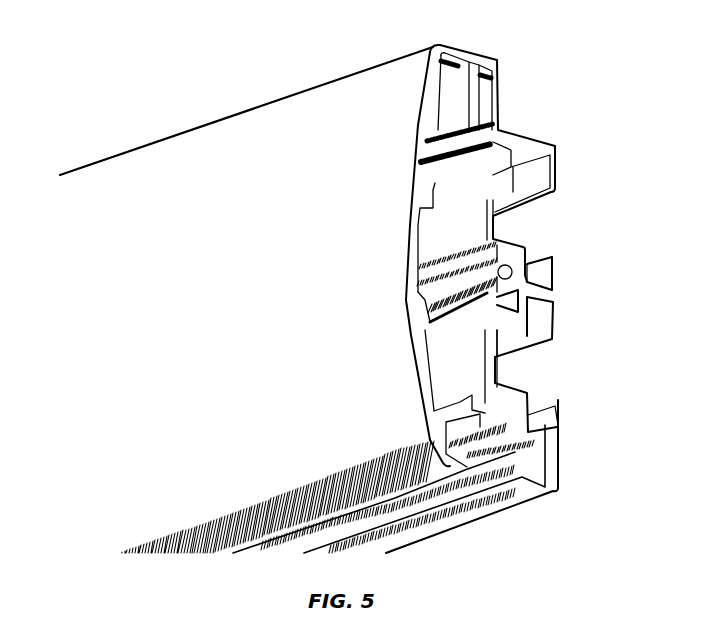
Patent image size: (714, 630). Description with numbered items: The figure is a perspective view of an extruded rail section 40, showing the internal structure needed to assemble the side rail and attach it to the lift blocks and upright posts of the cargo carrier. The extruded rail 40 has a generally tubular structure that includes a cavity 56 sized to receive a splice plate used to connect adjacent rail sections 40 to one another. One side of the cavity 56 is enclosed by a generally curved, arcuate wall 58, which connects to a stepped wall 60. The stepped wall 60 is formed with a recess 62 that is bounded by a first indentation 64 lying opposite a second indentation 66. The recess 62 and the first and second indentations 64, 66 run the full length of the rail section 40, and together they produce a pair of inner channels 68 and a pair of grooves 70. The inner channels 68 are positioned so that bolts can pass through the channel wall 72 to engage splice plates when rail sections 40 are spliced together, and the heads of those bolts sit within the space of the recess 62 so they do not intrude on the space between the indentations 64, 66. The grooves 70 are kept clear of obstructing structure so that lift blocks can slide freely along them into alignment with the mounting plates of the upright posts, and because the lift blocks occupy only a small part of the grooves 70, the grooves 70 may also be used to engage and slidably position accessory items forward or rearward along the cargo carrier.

The extruded rail section 40 is at (148, 202).
The cavity 56 is at (497, 360).
The arcuate wall 58 is at (427, 90).
The stepped wall 60 is at (490, 200).
The recess 62 is at (505, 227).
The first indentation 64 is at (538, 275).
The second indentation 66 is at (531, 159).
The inner channel 68 is at (499, 189).
The groove 70 is at (519, 213).
The channel wall 72 is at (443, 240).